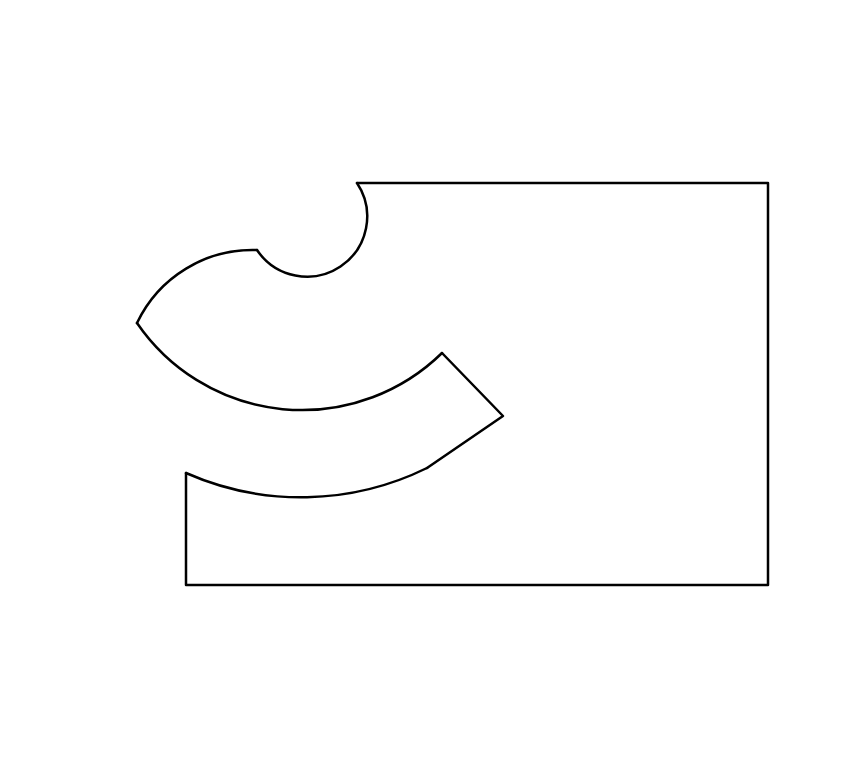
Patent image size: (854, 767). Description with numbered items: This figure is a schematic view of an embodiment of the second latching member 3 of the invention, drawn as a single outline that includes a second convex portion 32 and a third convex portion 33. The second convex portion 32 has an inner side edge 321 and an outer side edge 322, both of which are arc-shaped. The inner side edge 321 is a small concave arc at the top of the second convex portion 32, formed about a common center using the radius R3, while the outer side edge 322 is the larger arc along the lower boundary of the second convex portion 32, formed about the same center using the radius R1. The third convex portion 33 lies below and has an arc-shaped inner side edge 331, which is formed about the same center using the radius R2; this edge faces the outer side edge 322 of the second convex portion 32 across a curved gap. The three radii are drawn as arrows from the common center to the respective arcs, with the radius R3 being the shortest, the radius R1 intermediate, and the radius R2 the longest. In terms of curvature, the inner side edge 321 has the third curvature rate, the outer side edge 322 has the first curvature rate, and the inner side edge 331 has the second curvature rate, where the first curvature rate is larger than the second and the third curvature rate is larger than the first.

The second latching member 3 is at (88, 53).
The second convex portion 32 is at (245, 281).
The inner side edge 321 is at (284, 266).
The outer side edge 322 is at (181, 369).
The third convex portion 33 is at (409, 384).
The inner side edge 331 is at (235, 466).
The radius R1 is at (302, 211).
The radius R2 is at (302, 211).
The radius R3 is at (348, 243).